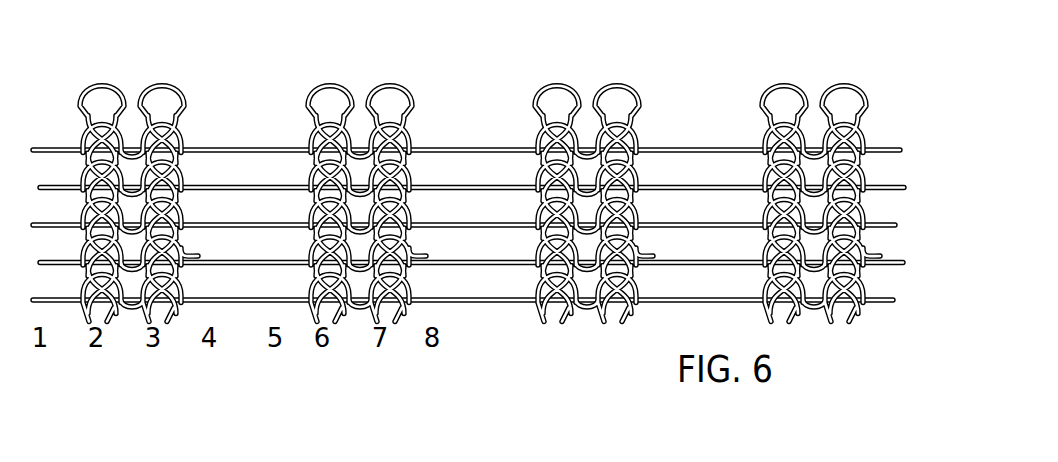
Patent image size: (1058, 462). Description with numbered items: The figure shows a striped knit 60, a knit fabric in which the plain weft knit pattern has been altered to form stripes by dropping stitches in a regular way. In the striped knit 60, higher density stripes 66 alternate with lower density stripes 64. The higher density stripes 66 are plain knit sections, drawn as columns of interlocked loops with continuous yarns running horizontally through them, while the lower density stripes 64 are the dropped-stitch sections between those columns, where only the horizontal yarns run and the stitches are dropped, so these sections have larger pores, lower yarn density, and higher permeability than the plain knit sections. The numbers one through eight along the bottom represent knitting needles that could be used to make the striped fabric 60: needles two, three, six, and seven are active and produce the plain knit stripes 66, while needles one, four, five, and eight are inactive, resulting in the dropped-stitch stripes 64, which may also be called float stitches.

The striped knit 60 is at (484, 171).
The lower density stripes 64 is at (464, 110).
The higher density stripes 66 is at (165, 85).